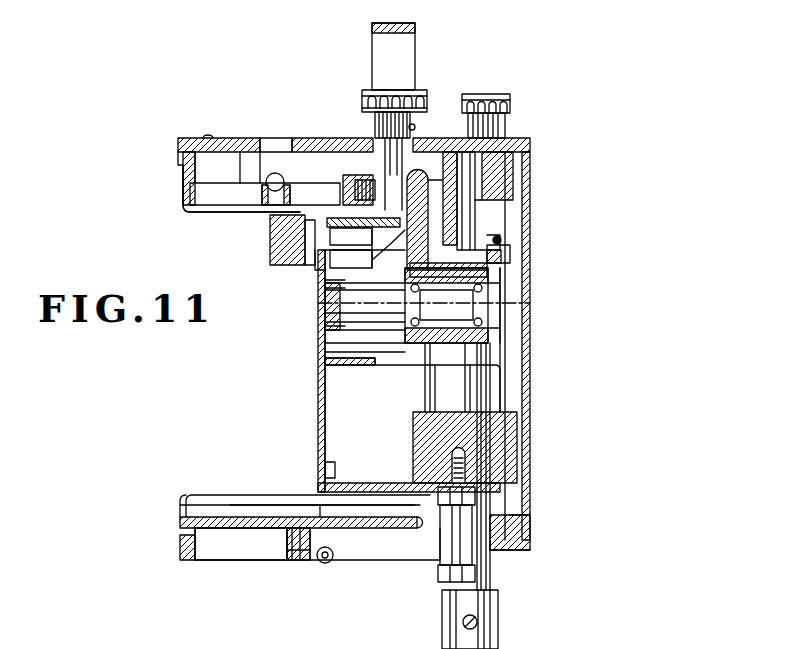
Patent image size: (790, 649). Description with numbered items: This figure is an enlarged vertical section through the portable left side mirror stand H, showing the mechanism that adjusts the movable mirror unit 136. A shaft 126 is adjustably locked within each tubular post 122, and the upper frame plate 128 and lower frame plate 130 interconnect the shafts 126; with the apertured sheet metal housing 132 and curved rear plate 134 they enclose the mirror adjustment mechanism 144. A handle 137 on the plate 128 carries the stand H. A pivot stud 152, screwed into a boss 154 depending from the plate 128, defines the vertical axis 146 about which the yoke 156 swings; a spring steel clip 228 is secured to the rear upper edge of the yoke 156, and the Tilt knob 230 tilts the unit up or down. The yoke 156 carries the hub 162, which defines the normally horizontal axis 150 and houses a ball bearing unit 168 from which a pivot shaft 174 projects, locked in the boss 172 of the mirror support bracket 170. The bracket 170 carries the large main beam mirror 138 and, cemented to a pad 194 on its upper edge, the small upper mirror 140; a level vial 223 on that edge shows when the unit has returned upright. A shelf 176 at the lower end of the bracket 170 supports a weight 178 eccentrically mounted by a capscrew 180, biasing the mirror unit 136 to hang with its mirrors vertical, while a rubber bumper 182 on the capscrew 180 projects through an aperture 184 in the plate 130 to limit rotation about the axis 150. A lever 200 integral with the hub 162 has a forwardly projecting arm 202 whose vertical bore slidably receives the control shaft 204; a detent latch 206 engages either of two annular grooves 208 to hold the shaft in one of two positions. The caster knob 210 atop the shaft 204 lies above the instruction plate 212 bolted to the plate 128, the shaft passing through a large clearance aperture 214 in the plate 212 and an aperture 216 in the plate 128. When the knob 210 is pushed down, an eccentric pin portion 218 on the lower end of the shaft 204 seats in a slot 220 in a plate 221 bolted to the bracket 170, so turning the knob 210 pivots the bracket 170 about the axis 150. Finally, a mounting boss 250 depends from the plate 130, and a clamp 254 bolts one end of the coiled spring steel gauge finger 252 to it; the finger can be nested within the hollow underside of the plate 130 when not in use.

The handle 137 is at (415, 28).
The caster knob 210 is at (362, 92).
The control shaft 204 is at (385, 122).
The aperture 216 is at (380, 138).
The clearance aperture 214 is at (413, 124).
The Tilt knob 230 is at (510, 100).
The upper frame plate 128 is at (178, 150).
The instruction plate 212 is at (190, 137).
The sheet metal housing 132 is at (183, 188).
The level vial 223 is at (265, 193).
The upper arm portion 202 is at (340, 178).
The annular grooves 208 is at (395, 172).
The detent latch 206 is at (375, 182).
The lever 200 is at (447, 224).
The pivot stud 152 is at (462, 228).
The boss 154 is at (500, 188).
The vertical axis 146 is at (475, 208).
The spring steel clip 228 is at (502, 238).
The yoke 156 is at (500, 252).
The mirror adjustment mechanism 144 is at (505, 258).
The small upper mirror 140 is at (270, 240).
The pad 194 is at (280, 225).
The plate 221 is at (316, 255).
The slot 220 is at (363, 232).
The eccentric pin portion 218 is at (367, 248).
The horizontal axis 150 is at (330, 300).
The pivot shaft 174 is at (325, 290).
The boss 172 is at (325, 325).
The ball bearing unit 168 is at (490, 286).
The hub 162 is at (488, 340).
The mirror unit 136 is at (310, 352).
The main beam mirror 138 is at (318, 380).
The curved rear plate 134 is at (525, 345).
The weight 178 is at (515, 440).
The capscrew 180 is at (452, 457).
The shelf 176 is at (478, 488).
The rubber bumper 182 is at (450, 545).
The shaft 126 is at (492, 578).
The tubular post 122 is at (492, 606).
The mirror support bracket 170 is at (325, 470).
The lower frame plate 130 is at (180, 545).
The mounting boss 250 is at (241, 544).
The clamp 254 is at (288, 562).
The gauge finger 252 is at (329, 562).
The aperture 184 is at (415, 522).
The portable left side mirror stand H is at (178, 498).